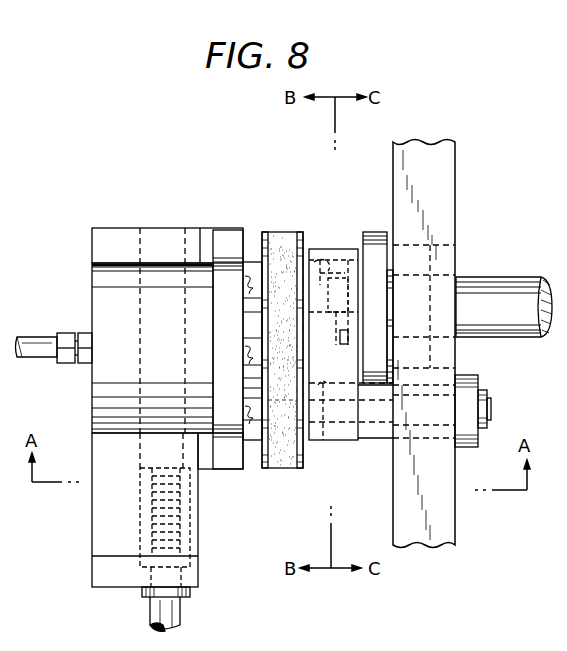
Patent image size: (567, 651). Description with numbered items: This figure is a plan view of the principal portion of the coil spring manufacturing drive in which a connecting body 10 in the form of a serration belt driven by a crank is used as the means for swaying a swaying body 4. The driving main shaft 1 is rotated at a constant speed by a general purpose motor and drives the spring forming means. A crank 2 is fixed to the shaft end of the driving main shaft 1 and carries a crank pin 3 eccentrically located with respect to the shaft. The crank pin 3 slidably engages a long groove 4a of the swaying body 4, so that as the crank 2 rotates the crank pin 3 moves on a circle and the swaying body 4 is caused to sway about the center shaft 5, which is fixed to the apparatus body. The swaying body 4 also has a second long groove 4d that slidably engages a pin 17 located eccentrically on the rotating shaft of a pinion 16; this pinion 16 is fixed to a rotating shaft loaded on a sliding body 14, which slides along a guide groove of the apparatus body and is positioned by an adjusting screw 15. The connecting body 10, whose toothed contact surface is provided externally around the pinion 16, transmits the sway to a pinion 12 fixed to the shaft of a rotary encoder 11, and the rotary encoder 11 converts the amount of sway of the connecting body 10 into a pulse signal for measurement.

The driving main shaft 1 is at (512, 301).
The crank 2 is at (375, 245).
The crank pin 3 is at (347, 330).
The swaying body 4 is at (335, 362).
The long groove 4a is at (335, 300).
The long groove 4d is at (323, 388).
The center shaft 5 is at (491, 404).
The connecting body 10 is at (281, 252).
The rotary encoder 11 is at (100, 318).
The pinion 12 is at (252, 320).
The sliding body 14 is at (205, 462).
The adjusting screw 15 is at (183, 520).
The pinion 16 is at (259, 253).
The pin 17 is at (322, 272).